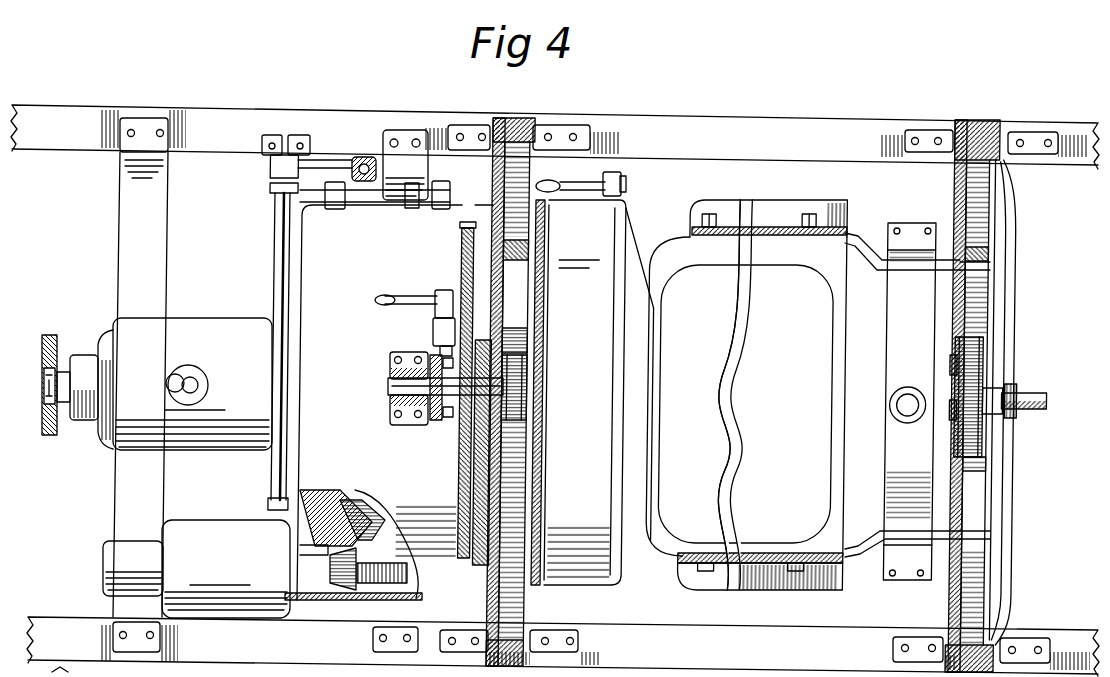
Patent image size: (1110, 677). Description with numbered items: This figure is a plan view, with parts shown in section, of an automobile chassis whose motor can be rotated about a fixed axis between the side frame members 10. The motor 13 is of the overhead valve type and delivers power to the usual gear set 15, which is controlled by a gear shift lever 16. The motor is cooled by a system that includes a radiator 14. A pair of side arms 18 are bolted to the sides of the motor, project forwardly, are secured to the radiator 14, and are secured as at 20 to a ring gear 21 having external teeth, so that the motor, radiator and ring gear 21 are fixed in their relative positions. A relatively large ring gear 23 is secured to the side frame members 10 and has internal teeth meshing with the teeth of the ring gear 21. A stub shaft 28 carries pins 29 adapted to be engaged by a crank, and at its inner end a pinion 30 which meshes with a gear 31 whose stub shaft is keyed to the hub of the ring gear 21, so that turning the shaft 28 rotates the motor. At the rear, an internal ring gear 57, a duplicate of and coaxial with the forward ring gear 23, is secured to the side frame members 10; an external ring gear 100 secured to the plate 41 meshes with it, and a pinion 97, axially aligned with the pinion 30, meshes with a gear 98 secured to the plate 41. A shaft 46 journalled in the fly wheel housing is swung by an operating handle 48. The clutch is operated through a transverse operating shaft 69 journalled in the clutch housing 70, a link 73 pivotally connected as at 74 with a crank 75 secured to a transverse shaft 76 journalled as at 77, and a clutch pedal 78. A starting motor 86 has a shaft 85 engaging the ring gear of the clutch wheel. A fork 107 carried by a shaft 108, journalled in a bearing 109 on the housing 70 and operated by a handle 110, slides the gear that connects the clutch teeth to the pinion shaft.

The side frame members 10 is at (717, 124).
The motor 13 is at (746, 395).
The radiator 14 is at (909, 401).
The gear set 15 is at (157, 384).
The gear shift lever 16 is at (178, 374).
The side arms 18 is at (867, 227).
The securing means 20 is at (985, 272).
The ring gear 21 is at (982, 248).
The ring gear 23 is at (968, 130).
The stub shaft 28 is at (1040, 406).
The pins 29 is at (1018, 410).
The pinion 30 is at (975, 380).
The gear 31 is at (983, 462).
The plate 41 is at (546, 314).
The shaft 46 is at (610, 196).
The operating handle 48 is at (588, 192).
The internal ring gear 57 is at (524, 122).
The transverse operating shaft 69 is at (456, 206).
The clutch housing 70 is at (389, 402).
The link 73 is at (371, 202).
The pivotal connection 74 is at (337, 208).
The crank 75 is at (304, 190).
The transverse shaft 76 is at (275, 208).
The journal 77 is at (278, 136).
The clutch pedal 78 is at (362, 155).
The shaft 85 is at (340, 586).
The starting motor 86 is at (196, 569).
The pinion 97 is at (532, 376).
The gear 98 is at (532, 330).
The external ring gear 100 is at (540, 242).
The fork 107 is at (445, 417).
The shaft 108 is at (440, 350).
The bearing 109 is at (434, 322).
The handle 110 is at (420, 298).